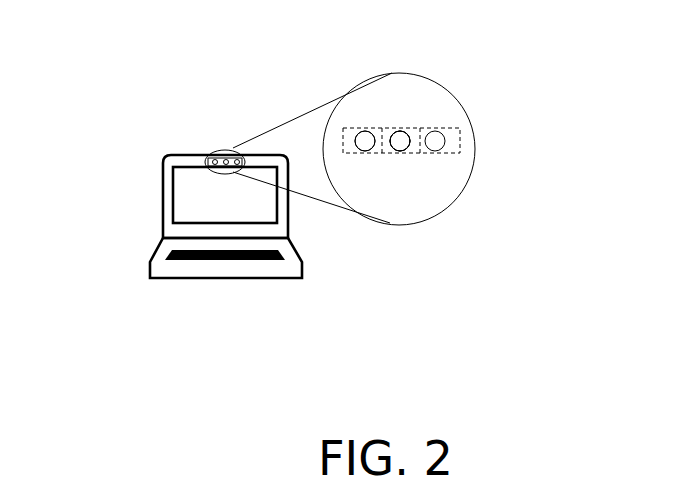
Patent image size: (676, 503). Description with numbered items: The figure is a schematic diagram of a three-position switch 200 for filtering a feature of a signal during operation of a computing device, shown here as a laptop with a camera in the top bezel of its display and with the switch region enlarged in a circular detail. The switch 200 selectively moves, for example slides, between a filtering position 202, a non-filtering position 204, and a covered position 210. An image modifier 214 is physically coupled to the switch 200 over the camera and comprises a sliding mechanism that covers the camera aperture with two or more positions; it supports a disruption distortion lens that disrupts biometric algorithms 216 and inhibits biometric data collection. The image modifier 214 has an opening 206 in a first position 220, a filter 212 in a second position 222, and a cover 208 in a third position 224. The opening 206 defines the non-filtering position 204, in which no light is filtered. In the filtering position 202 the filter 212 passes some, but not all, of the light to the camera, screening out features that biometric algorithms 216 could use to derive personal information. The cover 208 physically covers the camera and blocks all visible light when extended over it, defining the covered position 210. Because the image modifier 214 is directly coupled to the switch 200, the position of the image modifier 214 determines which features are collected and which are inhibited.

The three-position switch 200 is at (228, 143).
The filtering position 202 is at (412, 138).
The non-filtering position 204 is at (367, 127).
The opening 206 is at (364, 129).
The cover 208 is at (470, 152).
The covered position 210 is at (459, 142).
The filter 212 is at (403, 127).
The image modifier 214 is at (397, 227).
The biometric algorithms 216 is at (150, 217).
The first position 220 is at (365, 155).
The second position 222 is at (397, 156).
The third position 224 is at (442, 156).